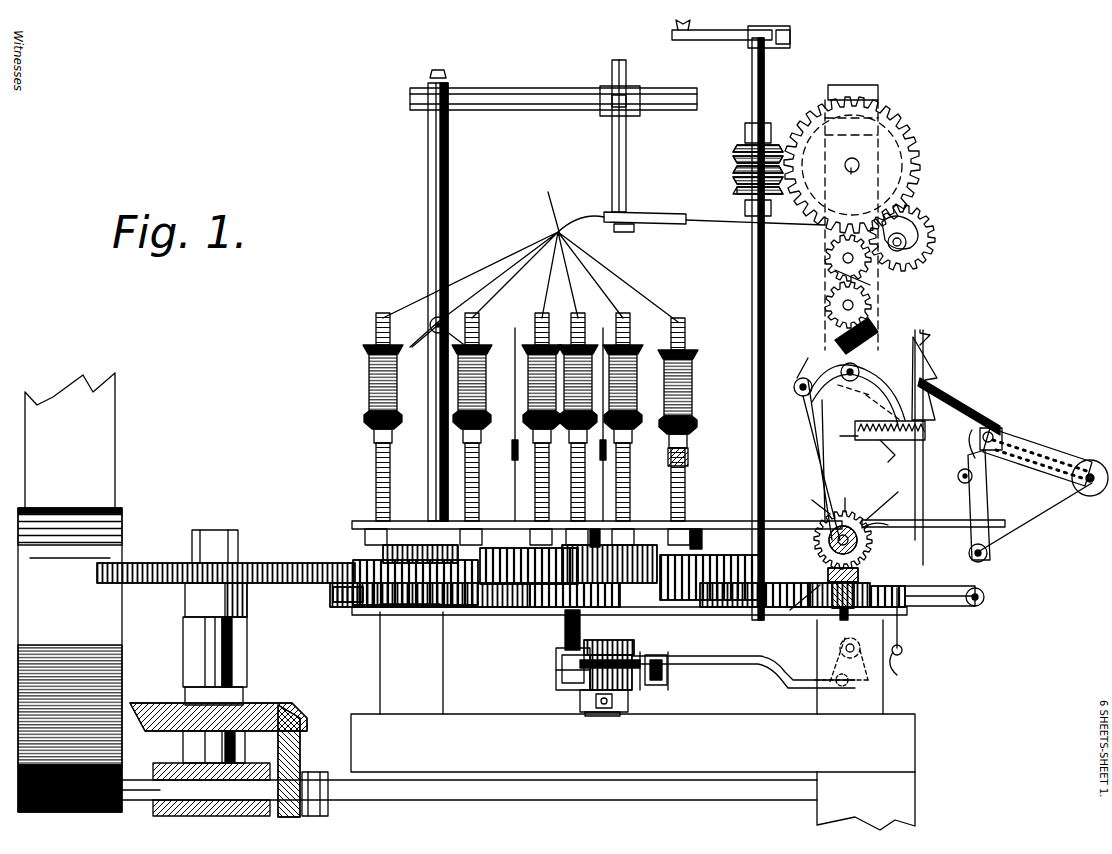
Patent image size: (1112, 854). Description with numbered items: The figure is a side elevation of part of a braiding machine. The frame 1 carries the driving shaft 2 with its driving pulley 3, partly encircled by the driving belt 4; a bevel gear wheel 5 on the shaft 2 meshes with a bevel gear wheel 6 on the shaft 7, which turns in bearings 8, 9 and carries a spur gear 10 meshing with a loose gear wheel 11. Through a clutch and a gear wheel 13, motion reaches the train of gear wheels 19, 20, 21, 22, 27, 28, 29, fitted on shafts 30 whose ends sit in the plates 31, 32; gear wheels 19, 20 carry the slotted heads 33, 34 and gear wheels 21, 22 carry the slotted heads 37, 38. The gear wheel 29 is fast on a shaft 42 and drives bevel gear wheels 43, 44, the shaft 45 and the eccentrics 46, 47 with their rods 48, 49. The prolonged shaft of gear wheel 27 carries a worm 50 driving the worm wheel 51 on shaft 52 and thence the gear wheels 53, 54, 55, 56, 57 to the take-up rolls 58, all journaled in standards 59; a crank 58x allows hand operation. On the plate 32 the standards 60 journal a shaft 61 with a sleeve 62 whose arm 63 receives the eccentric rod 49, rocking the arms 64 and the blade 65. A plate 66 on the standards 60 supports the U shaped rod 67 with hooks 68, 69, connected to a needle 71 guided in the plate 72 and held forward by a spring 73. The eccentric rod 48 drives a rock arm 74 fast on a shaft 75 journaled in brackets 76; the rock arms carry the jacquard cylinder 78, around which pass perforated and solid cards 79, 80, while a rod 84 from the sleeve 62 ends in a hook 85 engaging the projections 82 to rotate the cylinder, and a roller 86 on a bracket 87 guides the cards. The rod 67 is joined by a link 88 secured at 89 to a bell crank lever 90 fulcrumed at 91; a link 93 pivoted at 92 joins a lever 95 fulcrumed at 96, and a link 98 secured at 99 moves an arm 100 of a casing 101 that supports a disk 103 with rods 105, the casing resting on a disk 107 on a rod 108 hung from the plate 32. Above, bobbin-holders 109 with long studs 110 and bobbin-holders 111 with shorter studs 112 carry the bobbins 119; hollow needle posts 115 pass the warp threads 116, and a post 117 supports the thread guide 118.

The frame 1 is at (930, 778).
The driving shaft 2 is at (468, 789).
The driving pulley 3 is at (70, 660).
The driving belt 4 is at (70, 440).
The bevel gear wheel 5 is at (303, 752).
The bevel gear wheel 6 is at (250, 708).
The shaft 7 is at (210, 648).
The bearing 8 is at (182, 745).
The bearing 9 is at (236, 632).
The spur gear 10 is at (226, 561).
The gear wheel 11 is at (352, 570).
The gear wheel 13 is at (333, 596).
The gear wheel 19 is at (420, 605).
The gear wheel 20 is at (525, 607).
The gear wheel 21 is at (580, 624).
The gear wheel 22 is at (710, 607).
The gear wheel 27 is at (760, 607).
The gear wheel 28 is at (800, 607).
The gear wheel 29 is at (830, 612).
The shafts 30 is at (740, 329).
The plate 31 is at (352, 525).
The plate 32 is at (368, 615).
The slotted head 33 is at (400, 612).
The slotted head 34 is at (522, 566).
The slotted head 37 is at (609, 564).
The slotted head 38 is at (710, 577).
The shaft 42 is at (815, 618).
The bevel gear wheel 43 is at (815, 540).
The bevel gear wheel 44 is at (822, 515).
The shaft 45 is at (905, 492).
The eccentric 46 is at (849, 493).
The eccentric 47 is at (812, 498).
The eccentric rod 48 is at (945, 520).
The eccentric rod 49 is at (822, 457).
The worm 50 is at (738, 160).
The worm wheel 51 is at (920, 150).
The shaft 52 is at (860, 164).
The gear wheel 53 is at (920, 182).
The gear wheel 54 is at (918, 220).
The gear wheel 55 is at (825, 258).
The gear wheel 56 is at (825, 300).
The gear wheel 57 is at (825, 322).
The take-up rolls 58 is at (860, 288).
The crank 58x is at (731, 38).
The standards 59 is at (878, 95).
The standards 60 is at (928, 463).
The shaft 61 is at (845, 380).
The sleeve 62 is at (870, 345).
The arm 63 is at (808, 358).
The arms 64 is at (915, 335).
The blade 65 is at (925, 360).
The plate 66 is at (960, 600).
The U shaped rod 67 is at (923, 488).
The hook 68 is at (922, 340).
The hook 69 is at (884, 406).
The needle 71 is at (925, 432).
The plate 72 is at (875, 433).
The spring 73 is at (880, 442).
The rock arm 74 is at (990, 494).
The shaft 75 is at (984, 598).
The brackets 76 is at (940, 598).
The jacquard cylinder 78 is at (1037, 457).
The perforated cards 79 is at (1050, 455).
The solid cards 80 is at (1045, 454).
The projections 82 is at (990, 428).
The rod 84 is at (975, 404).
The hook 85 is at (1002, 432).
The roller 86 is at (1088, 485).
The bracket 87 is at (1035, 520).
The link 88 is at (900, 637).
The connection point 89 is at (904, 654).
The bell crank lever 90 is at (898, 675).
The fulcrum 91 is at (840, 650).
The pivot 92 is at (840, 688).
The link 93 is at (750, 664).
The lever 95 is at (668, 678).
The fulcrum 96 is at (680, 690).
The link 98 is at (585, 672).
The connection point 99 is at (558, 676).
The arm 100 is at (556, 652).
The casing 101 is at (560, 682).
The disk 103 is at (584, 645).
The rods 105 is at (555, 642).
The disk 107 is at (590, 700).
The rod 108 is at (600, 712).
The bobbin-holders 109 is at (375, 475).
The studs 110 is at (365, 535).
The bobbin-holders 111 is at (575, 500).
The studs 112 is at (655, 530).
The hollow needle posts 115 is at (440, 465).
The warp threads 116 is at (365, 525).
The post 117 is at (428, 185).
The guide 118 is at (553, 227).
The bobbins 119 is at (368, 378).